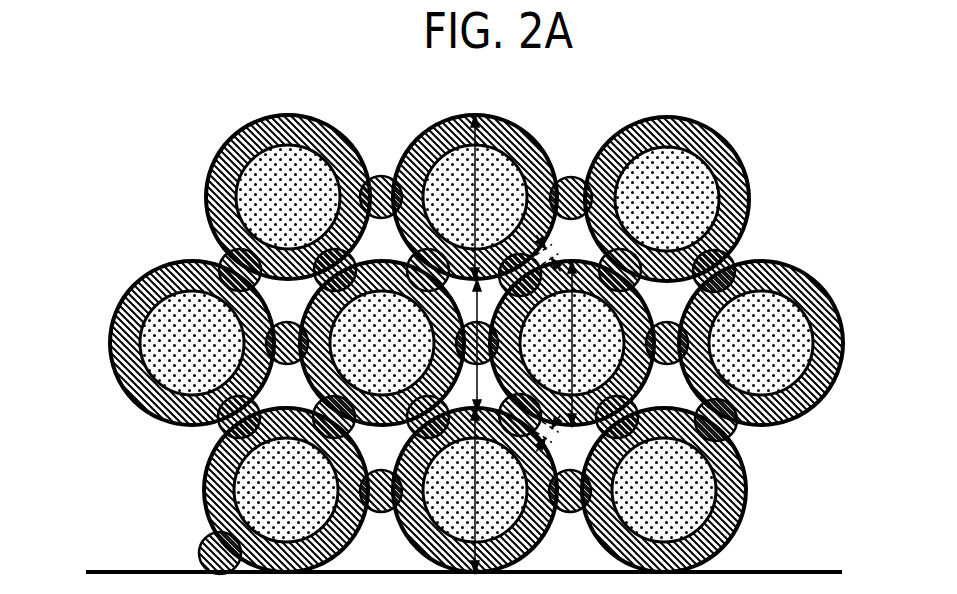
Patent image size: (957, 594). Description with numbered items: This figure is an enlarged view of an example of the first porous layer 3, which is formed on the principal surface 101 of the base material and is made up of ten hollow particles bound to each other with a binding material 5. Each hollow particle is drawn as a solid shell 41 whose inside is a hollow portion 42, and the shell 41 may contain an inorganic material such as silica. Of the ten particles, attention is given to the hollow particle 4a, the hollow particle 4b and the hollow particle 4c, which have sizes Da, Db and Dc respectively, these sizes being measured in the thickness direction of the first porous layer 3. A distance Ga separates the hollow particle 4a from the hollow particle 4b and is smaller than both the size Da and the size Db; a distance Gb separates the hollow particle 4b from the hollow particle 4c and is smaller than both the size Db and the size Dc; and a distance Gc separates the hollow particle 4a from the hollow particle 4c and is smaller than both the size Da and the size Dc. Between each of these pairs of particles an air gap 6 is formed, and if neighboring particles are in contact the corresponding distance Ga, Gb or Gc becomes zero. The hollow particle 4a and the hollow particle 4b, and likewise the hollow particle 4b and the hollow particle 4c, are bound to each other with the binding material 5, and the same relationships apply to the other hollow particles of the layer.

The first porous layer 3 is at (86, 119).
The hollow particle 4a is at (437, 117).
The hollow particle 4b is at (655, 372).
The hollow particle 4c is at (424, 551).
The binding material 5 is at (571, 178).
The air gap 6 is at (690, 292).
The shell 41 is at (708, 150).
The hollow portion 42 is at (703, 186).
The principal surface 101 is at (439, 574).
The size of hollow particle 4a Da is at (475, 197).
The size of hollow particle 4b Db is at (572, 343).
The size of hollow particle 4c Dc is at (475, 490).
The distance between hollow particles 4a and 4b Ga is at (556, 254).
The distance between hollow particles 4b and 4c Gb is at (557, 436).
The distance between hollow particles 4a and 4c Gc is at (478, 345).